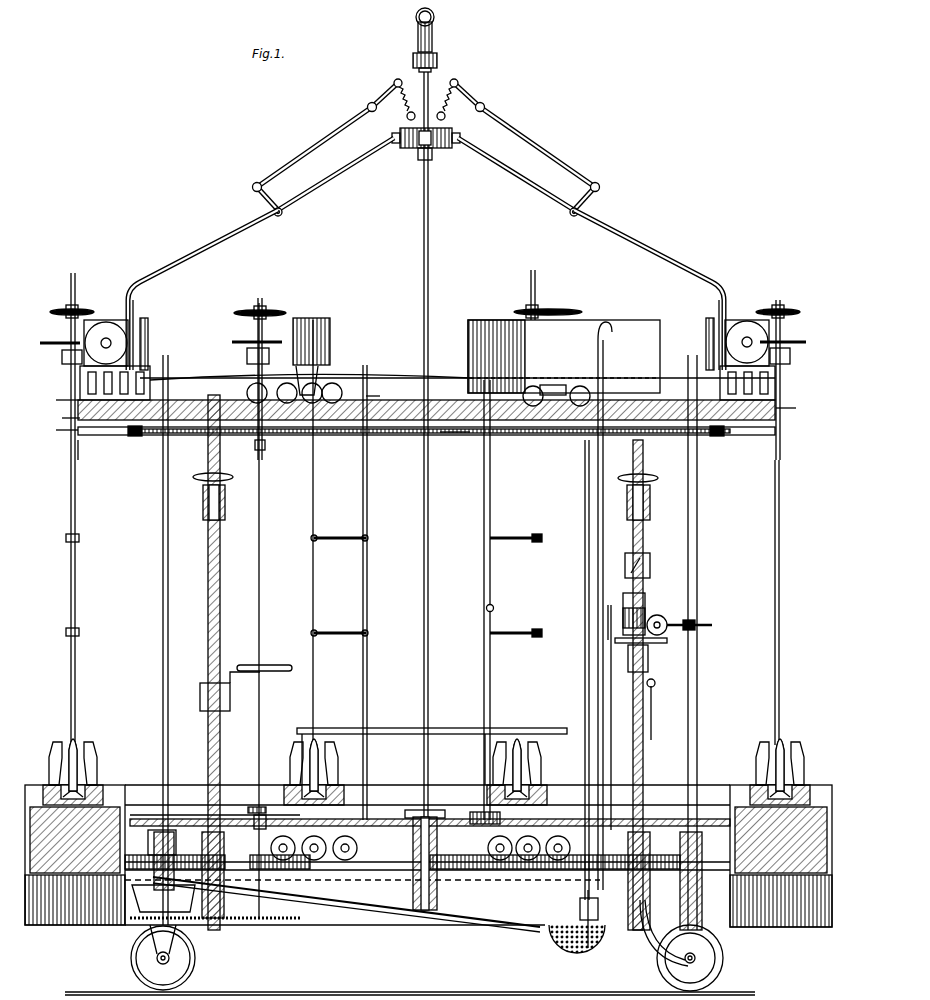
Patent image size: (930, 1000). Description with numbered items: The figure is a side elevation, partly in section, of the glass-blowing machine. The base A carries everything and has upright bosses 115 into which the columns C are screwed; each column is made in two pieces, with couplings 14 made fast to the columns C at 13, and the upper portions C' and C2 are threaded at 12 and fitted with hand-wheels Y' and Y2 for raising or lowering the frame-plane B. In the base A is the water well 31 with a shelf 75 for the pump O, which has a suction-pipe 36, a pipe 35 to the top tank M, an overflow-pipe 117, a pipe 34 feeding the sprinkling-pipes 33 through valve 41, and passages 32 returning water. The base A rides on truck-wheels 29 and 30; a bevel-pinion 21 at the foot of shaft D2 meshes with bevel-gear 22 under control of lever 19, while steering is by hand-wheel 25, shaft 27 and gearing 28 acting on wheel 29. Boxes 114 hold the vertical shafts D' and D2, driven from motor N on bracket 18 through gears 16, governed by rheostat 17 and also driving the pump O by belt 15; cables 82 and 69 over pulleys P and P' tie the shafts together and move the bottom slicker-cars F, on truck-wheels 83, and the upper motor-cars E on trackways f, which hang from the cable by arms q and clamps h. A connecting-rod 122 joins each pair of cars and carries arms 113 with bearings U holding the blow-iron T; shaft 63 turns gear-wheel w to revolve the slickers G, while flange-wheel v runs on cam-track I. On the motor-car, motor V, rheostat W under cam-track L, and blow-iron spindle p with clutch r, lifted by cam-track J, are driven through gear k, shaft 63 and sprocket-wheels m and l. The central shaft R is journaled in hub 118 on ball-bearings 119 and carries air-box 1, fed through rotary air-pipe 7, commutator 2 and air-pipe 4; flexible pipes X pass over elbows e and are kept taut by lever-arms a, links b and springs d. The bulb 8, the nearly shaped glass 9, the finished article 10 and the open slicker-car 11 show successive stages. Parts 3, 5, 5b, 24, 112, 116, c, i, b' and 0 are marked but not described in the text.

The air-box 1 is at (430, 147).
The commutator 2 is at (433, 62).
The knob 3 is at (433, 17).
The air-pipe 4 is at (434, 37).
The central shaft 5 is at (431, 184).
The vertical rotary air-pipe 7 is at (426, 100).
The glass bulb 8 is at (78, 758).
The glass 9 is at (313, 765).
The glass 10 is at (782, 740).
The slicker-car 11 is at (526, 762).
The screw-threads 12 is at (222, 490).
The coupling fastening point 13 is at (428, 534).
The couplings 14 is at (222, 508).
The endless belt 15 is at (620, 717).
The train of gears 16 is at (670, 621).
The rheostat 17 is at (650, 560).
The bracket 18 is at (648, 656).
The lever 19 is at (660, 709).
The bevel-pinion 21 is at (704, 932).
The bevel-gear 22 is at (701, 958).
The rod 24 is at (310, 634).
The hand-wheel 25 is at (246, 681).
The shaft 27 is at (312, 852).
The train of gearing 28 is at (221, 901).
The truck-wheel 29 is at (174, 957).
The truck-wheels 30 is at (664, 940).
The well 31 is at (556, 960).
The holes or passages 32 is at (82, 928).
The sprinkling-pipes 33 is at (520, 728).
The pipe 34 is at (499, 677).
The pipe 35 is at (560, 378).
The suction-pipe 36 is at (577, 919).
The valve 41 is at (494, 606).
The vertical rotary shaft 63 is at (414, 610).
The cable 69 is at (455, 440).
The shelf 75 is at (600, 930).
The cable 82 is at (481, 810).
The truck-wheels 83 is at (534, 853).
The bearing 112 is at (698, 920).
The horizontal arms 113 is at (426, 579).
The boxes 114 is at (187, 852).
The upright bosses 115 is at (453, 851).
The bearing 116 is at (148, 846).
The overflow-pipe 117 is at (612, 606).
The hub or boss 118 is at (437, 888).
The ball-bearings 119 is at (437, 832).
The vertical connecting-rod 122 is at (426, 592).
The lever-arms a is at (426, 145).
The links b is at (429, 197).
The lower arm c is at (426, 162).
The tension-springs d is at (426, 94).
The round elbow e is at (432, 214).
The flexible air-pipe X is at (426, 290).
The cam-track L is at (426, 387).
The upper motor-car E is at (475, 375).
The flanged pulleys P is at (442, 549).
The sprocket-wheel m is at (422, 305).
The electric motor V is at (426, 338).
The rheostat W is at (427, 343).
The pump O is at (436, 335).
The gear k is at (425, 348).
The cam-track J is at (82, 385).
The blow-iron spindle p is at (434, 394).
The clutch r is at (428, 418).
The connecting-arms q is at (420, 414).
The frame-plane B is at (791, 406).
The clamps h is at (419, 449).
The flanged pulleys P' is at (426, 440).
The sprocket-wheel l is at (396, 365).
The flange-wheel v is at (400, 446).
The rollers i is at (295, 384).
The trackways f is at (380, 397).
The tank M is at (564, 363).
The vertical rotary shaft D' is at (161, 640).
The vertical rotary shaft D2 is at (698, 642).
The upper column portion C' is at (221, 662).
The upper column portion C2 is at (651, 685).
The hand-wheel Y' is at (221, 494).
The hand-wheel Y2 is at (647, 491).
The central shaft R is at (440, 553).
The blow-iron T is at (435, 555).
The blow-iron supports or bearings U is at (310, 584).
The motor N is at (640, 603).
The columns C is at (408, 757).
The base A is at (428, 866).
The slicker-car F is at (423, 825).
The plate 5b is at (130, 795).
The gear-wheel w is at (431, 801).
The cam-track I is at (550, 841).
The collar b' is at (443, 801).
The pin 0 is at (578, 893).
The slickers G is at (425, 773).